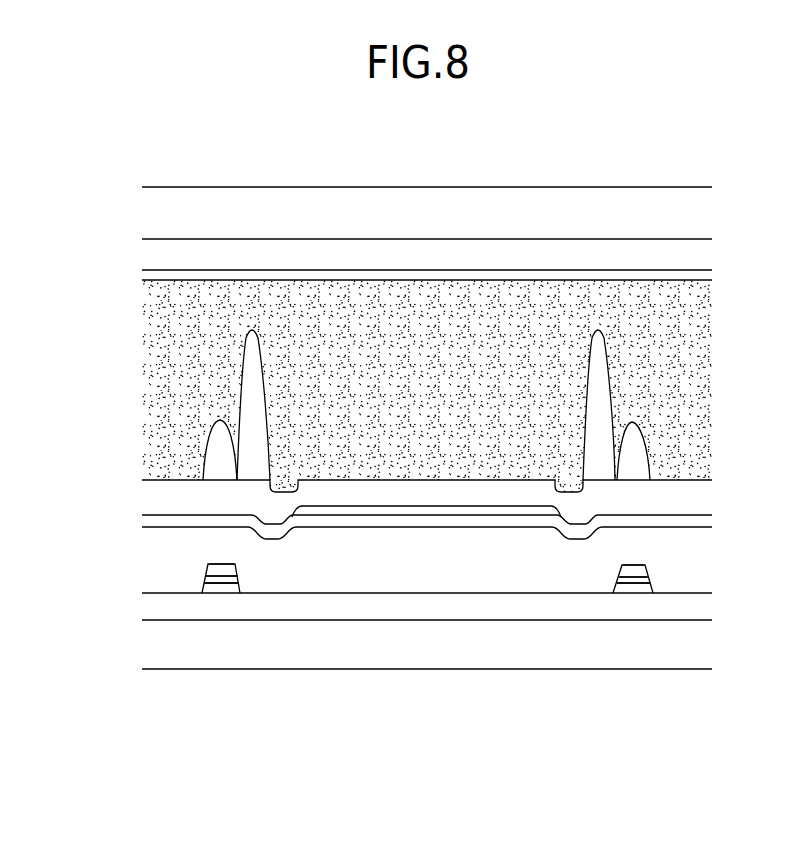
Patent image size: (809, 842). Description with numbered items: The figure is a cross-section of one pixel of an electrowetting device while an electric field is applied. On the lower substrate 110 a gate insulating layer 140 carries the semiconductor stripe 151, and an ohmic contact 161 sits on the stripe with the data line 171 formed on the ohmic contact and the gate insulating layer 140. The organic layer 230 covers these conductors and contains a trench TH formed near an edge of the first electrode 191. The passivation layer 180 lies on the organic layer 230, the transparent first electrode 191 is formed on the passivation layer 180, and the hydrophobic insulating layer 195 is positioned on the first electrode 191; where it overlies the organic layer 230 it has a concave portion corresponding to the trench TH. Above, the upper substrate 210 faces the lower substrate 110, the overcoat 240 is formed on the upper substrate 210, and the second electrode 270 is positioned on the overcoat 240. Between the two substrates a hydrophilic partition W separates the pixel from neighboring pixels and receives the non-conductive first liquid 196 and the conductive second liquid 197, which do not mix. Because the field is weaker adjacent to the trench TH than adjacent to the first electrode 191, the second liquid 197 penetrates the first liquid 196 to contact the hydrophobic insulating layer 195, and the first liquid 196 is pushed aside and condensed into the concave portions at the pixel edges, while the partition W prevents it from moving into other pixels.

The lower substrate 110 is at (692, 648).
The gate insulating layer 140 is at (692, 612).
The semiconductor stripe 151 is at (230, 589).
The ohmic contact 161 is at (223, 580).
The data line 171 is at (218, 572).
The passivation layer 180 is at (692, 522).
The first electrode 191 is at (442, 505).
The hydrophobic insulating layer 195 is at (692, 498).
The first liquid 196 is at (257, 369).
The second liquid 197 is at (460, 325).
The upper substrate 210 is at (688, 212).
The organic layer 230 is at (692, 562).
The overcoat 240 is at (690, 258).
The second electrode 270 is at (690, 281).
The trench TH is at (279, 521).
The partition W is at (633, 447).